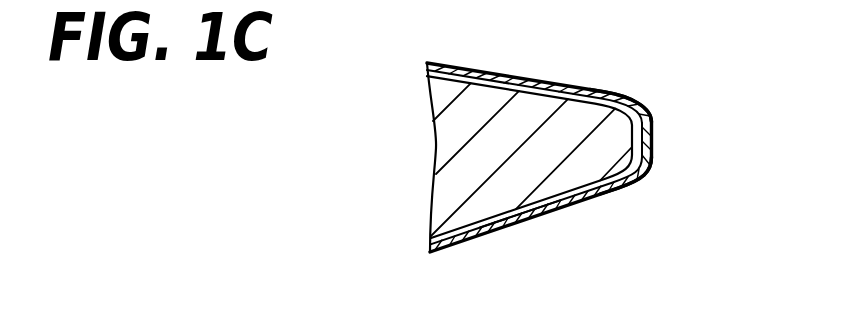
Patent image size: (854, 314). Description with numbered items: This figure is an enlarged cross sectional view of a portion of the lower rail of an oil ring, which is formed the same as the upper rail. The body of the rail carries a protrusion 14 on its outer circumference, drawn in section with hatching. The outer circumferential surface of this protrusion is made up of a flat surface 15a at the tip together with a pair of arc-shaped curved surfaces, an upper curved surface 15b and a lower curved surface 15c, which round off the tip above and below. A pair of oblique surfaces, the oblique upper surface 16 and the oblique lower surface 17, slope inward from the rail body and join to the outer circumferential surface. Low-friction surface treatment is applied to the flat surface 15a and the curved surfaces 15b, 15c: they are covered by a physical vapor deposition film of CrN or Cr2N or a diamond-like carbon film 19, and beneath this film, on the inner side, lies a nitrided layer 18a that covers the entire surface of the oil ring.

The protrusion 14 is at (443, 146).
The flat surface 15a is at (652, 135).
The upper arc-shaped curved surface 15b is at (636, 103).
The lower arc-shaped curved surface 15c is at (645, 184).
The oblique upper surface 16 is at (497, 74).
The oblique lower surface 17 is at (512, 230).
The nitrided layer 18a is at (556, 92).
The diamond-like carbon film 19 is at (646, 146).